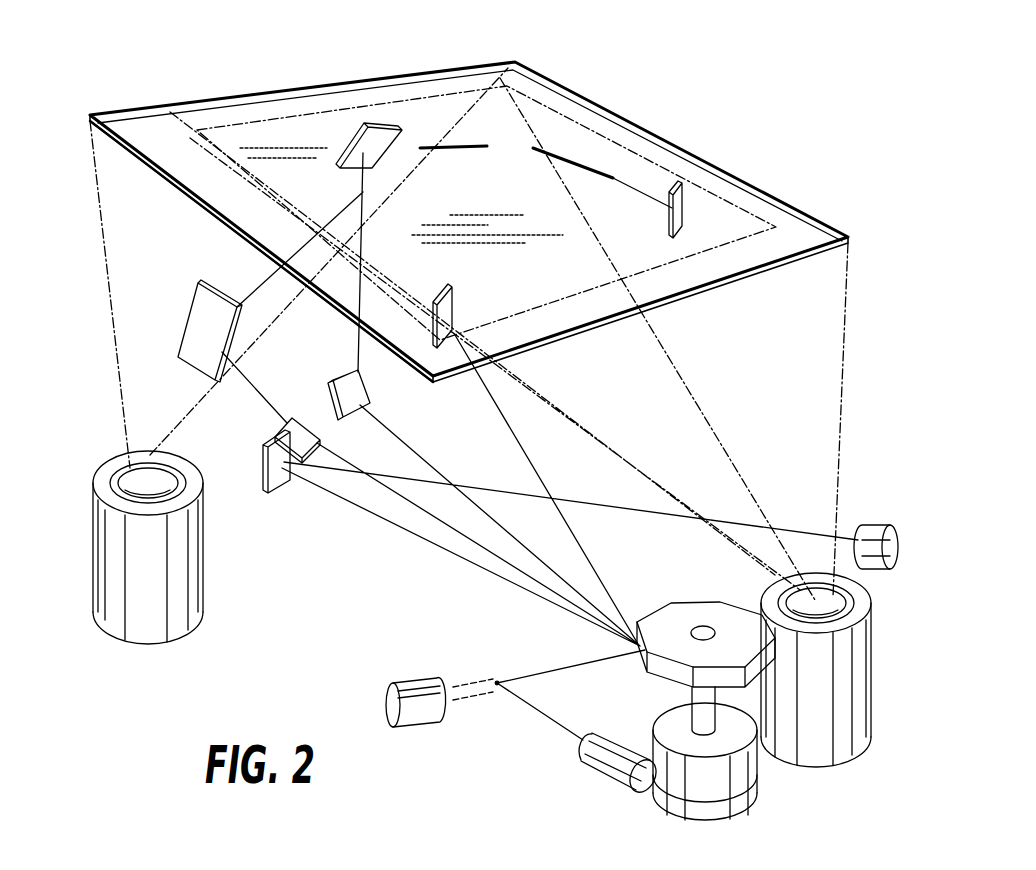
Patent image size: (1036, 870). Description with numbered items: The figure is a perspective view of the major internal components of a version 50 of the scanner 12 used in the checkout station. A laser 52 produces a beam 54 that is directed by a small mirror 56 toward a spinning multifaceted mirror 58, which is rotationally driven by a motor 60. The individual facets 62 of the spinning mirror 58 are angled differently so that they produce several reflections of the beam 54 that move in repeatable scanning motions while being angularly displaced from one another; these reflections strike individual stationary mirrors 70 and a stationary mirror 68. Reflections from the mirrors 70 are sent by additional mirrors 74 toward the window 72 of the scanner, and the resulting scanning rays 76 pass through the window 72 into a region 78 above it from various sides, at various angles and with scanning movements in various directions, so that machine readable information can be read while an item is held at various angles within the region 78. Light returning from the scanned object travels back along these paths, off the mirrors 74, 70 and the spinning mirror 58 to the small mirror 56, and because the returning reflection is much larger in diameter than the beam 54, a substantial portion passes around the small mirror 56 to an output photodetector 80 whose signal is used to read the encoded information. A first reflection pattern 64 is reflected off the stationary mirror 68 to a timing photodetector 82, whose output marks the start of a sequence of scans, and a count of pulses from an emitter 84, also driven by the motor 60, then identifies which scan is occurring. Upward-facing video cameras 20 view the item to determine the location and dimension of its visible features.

The region 78 is at (142, 68).
The scanner 12 is at (482, 222).
The scanner version 50 is at (795, 200).
The window 72 is at (268, 95).
The scanning rays 76 is at (452, 147).
The additional mirrors 74 is at (400, 126).
The individual mirrors 70 is at (317, 417).
The first reflection pattern 64 is at (427, 457).
The stationary mirror 68 is at (262, 490).
The video cameras 20 is at (203, 587).
The spinning multifaceted mirror 58 is at (657, 605).
The facets 62 is at (667, 690).
The motor 60 is at (762, 770).
The emitter 84 is at (668, 807).
The laser 52 is at (607, 780).
The beam 54 is at (562, 730).
The small mirror 56 is at (497, 680).
The output photodetector 80 is at (403, 680).
The timing photodetector 82 is at (875, 520).